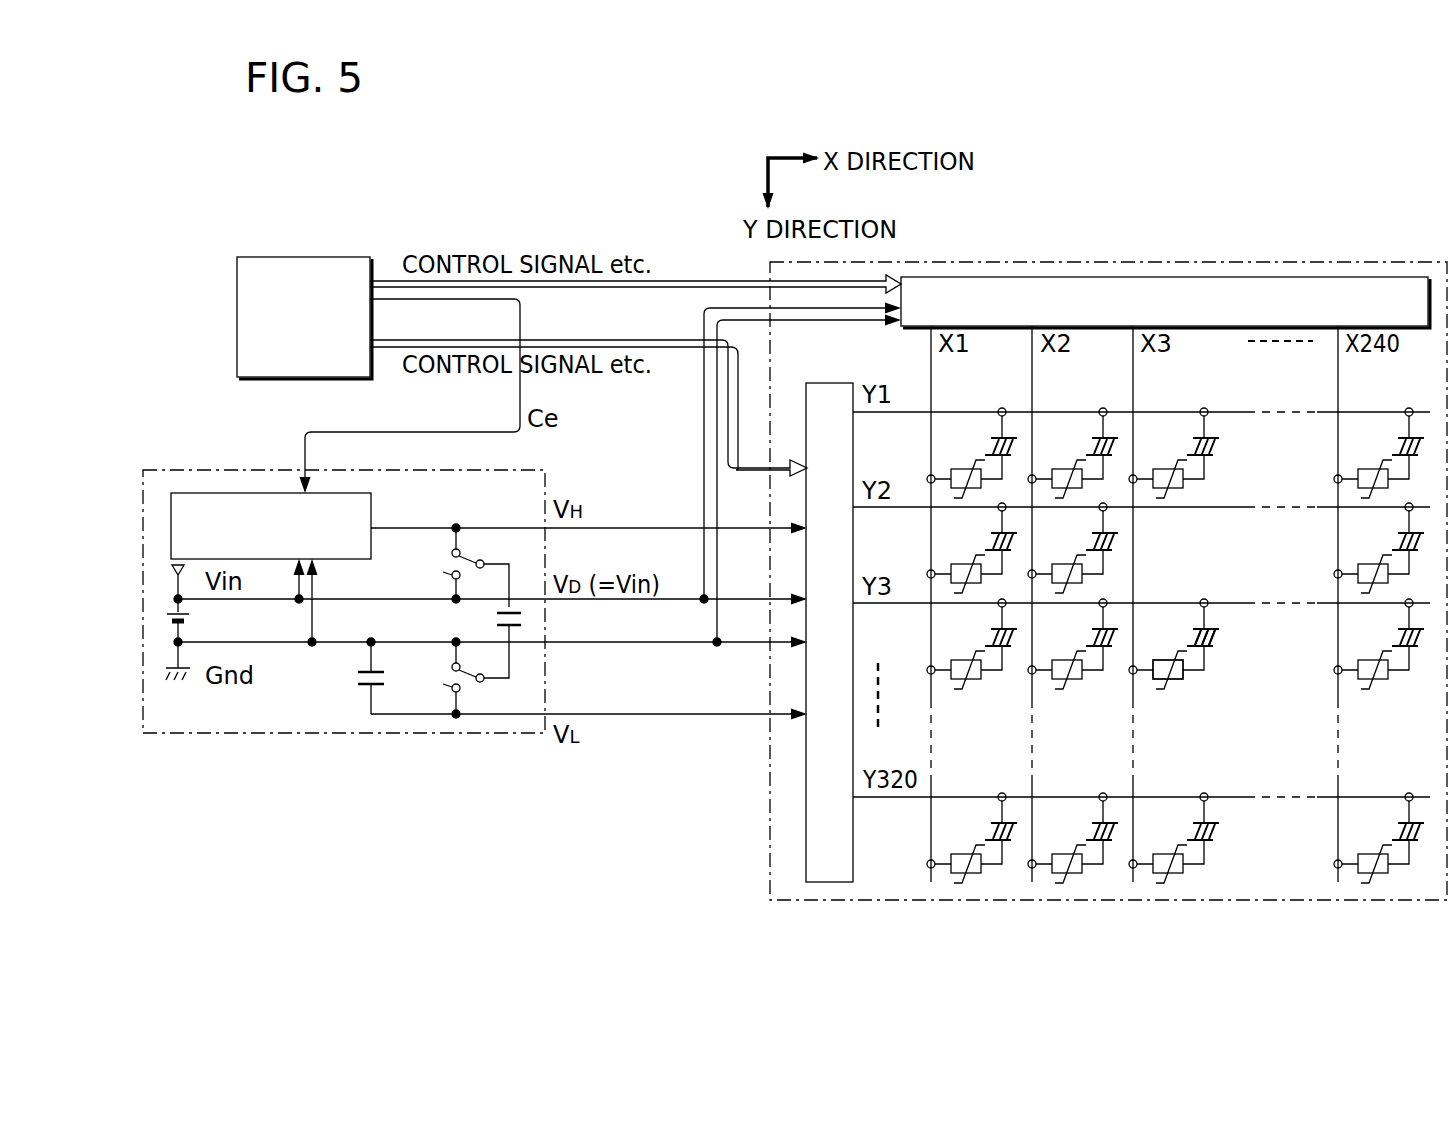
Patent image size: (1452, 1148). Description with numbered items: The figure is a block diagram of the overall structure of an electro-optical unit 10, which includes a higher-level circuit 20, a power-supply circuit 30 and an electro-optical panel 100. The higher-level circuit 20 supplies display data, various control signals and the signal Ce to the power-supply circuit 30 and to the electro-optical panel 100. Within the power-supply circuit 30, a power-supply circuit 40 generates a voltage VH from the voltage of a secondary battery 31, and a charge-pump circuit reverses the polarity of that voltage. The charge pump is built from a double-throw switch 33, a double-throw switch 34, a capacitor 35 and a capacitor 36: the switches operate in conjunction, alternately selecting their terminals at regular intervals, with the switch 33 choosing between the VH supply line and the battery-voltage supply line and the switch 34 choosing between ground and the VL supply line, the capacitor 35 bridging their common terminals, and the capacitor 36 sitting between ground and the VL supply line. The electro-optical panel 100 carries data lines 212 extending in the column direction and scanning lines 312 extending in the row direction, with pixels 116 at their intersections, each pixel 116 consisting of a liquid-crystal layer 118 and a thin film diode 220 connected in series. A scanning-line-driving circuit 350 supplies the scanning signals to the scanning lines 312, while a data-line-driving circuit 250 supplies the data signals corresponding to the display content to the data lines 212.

The electro-optical unit 10 is at (674, 175).
The higher-level circuit 20 is at (312, 379).
The power-supply circuit 30 is at (208, 470).
The secondary battery 31 is at (190, 616).
The double-throw switch 33 is at (450, 553).
The double-throw switch 34 is at (450, 688).
The capacitor 35 is at (494, 622).
The capacitor 36 is at (356, 678).
The power-supply circuit 40 is at (254, 493).
The electro-optical panel 100 is at (1178, 901).
The pixel 116 is at (1225, 679).
The liquid-crystal layer 118 is at (1222, 638).
The data line 212 is at (1033, 786).
The thin film diode 220 is at (1180, 682).
The data-line-driving circuit 250 is at (912, 326).
The scanning line 312 is at (1211, 507).
The scanning-line-driving circuit 350 is at (826, 383).